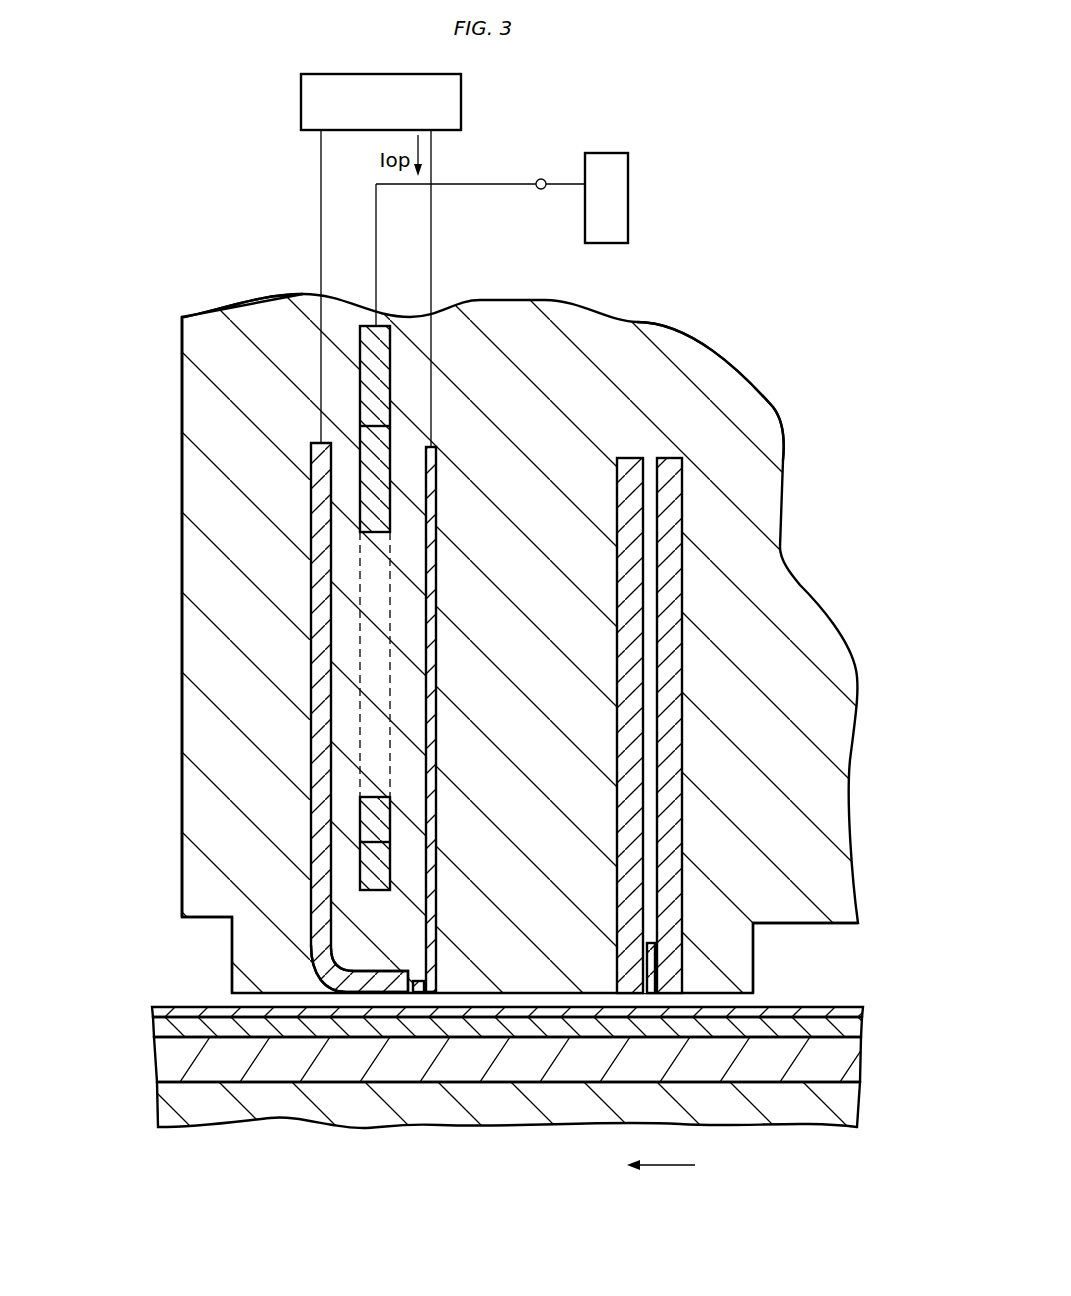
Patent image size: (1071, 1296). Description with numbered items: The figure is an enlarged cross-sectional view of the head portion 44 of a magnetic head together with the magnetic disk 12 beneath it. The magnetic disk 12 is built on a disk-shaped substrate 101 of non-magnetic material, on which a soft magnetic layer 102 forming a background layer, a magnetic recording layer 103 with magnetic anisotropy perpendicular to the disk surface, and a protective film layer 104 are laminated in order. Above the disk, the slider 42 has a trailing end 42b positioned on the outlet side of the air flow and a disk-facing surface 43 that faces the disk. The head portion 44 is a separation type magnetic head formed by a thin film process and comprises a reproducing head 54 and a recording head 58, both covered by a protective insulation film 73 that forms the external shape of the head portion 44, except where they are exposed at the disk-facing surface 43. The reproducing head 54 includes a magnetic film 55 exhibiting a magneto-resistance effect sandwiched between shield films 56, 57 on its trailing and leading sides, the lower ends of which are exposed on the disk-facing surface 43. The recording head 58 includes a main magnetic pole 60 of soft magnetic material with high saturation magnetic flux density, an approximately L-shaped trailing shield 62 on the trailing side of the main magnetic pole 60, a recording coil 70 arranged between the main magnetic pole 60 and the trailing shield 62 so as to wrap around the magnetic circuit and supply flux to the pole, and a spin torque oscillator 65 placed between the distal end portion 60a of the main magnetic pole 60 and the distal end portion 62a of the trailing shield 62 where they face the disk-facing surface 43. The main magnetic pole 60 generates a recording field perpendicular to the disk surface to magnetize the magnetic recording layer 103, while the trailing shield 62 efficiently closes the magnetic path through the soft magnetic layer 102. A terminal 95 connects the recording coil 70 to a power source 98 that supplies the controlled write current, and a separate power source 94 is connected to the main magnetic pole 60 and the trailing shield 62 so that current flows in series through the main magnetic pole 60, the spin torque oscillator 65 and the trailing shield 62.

The magnetic disk 12 is at (475, 1100).
The slider 42 is at (770, 431).
The trailing end 42b is at (182, 550).
The disk-facing surface 43 is at (790, 925).
The head portion 44 is at (655, 337).
The reproducing head 54 is at (667, 697).
The magnetic film 55 is at (655, 955).
The shield film 56 is at (670, 658).
The shield film 57 is at (640, 612).
The recording head 58 is at (305, 704).
The main magnetic pole 60 is at (455, 811).
The distal end portion of main magnetic pole 60a is at (433, 982).
The trailing shield 62 is at (259, 809).
The distal end portion of trailing shield 62a is at (357, 987).
The spin torque oscillator 65 is at (417, 983).
The recording coil 70 is at (370, 443).
The protective insulation film 73 is at (202, 332).
The power source 94 is at (301, 98).
The terminal 95 is at (541, 178).
The power source 98 is at (628, 172).
The substrate 101 is at (168, 1107).
The soft magnetic layer 102 is at (157, 1060).
The magnetic recording layer 103 is at (157, 1027).
The protective film layer 104 is at (152, 1010).